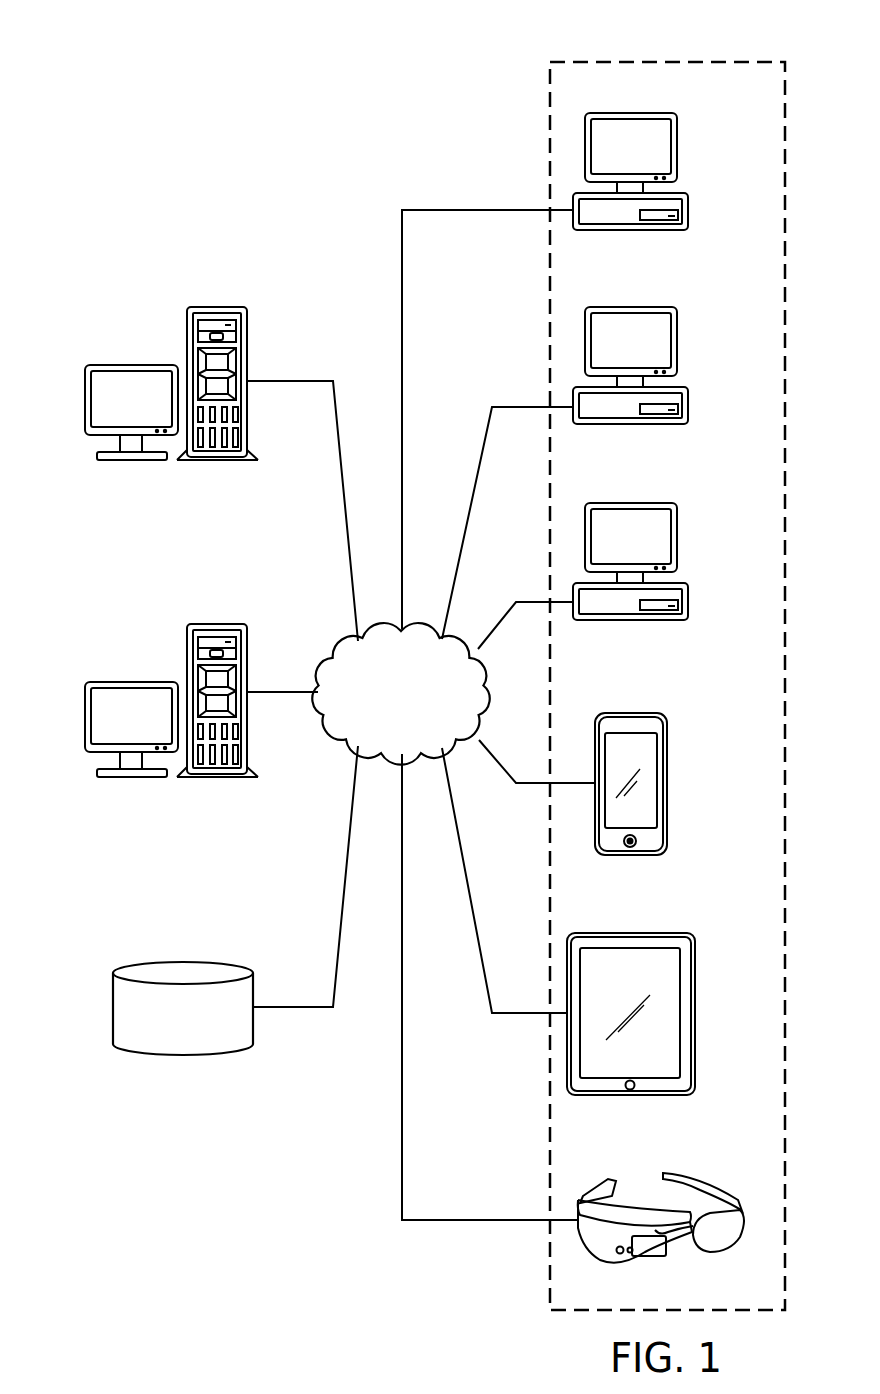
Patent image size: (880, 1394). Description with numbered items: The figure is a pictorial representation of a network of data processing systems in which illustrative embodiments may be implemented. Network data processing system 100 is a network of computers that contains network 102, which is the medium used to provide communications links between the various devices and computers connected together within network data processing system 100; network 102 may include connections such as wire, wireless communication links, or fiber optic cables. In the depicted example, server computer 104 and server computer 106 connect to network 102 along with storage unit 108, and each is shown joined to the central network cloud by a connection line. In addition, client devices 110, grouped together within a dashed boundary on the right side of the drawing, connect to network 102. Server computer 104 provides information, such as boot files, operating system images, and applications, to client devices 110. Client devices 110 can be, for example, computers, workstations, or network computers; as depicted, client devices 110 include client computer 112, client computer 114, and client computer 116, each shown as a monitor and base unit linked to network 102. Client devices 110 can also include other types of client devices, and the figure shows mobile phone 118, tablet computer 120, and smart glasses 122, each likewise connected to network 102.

The network data processing system 100 is at (210, 111).
The network 102 is at (380, 725).
The server computer 104 is at (131, 365).
The server computer 106 is at (131, 682).
The storage unit 108 is at (113, 1018).
The client devices 110 is at (696, 57).
The client computer 112 is at (678, 146).
The client computer 114 is at (678, 343).
The client computer 116 is at (678, 540).
The mobile phone 118 is at (667, 797).
The tablet computer 120 is at (696, 1030).
The smart glasses 122 is at (706, 1181).